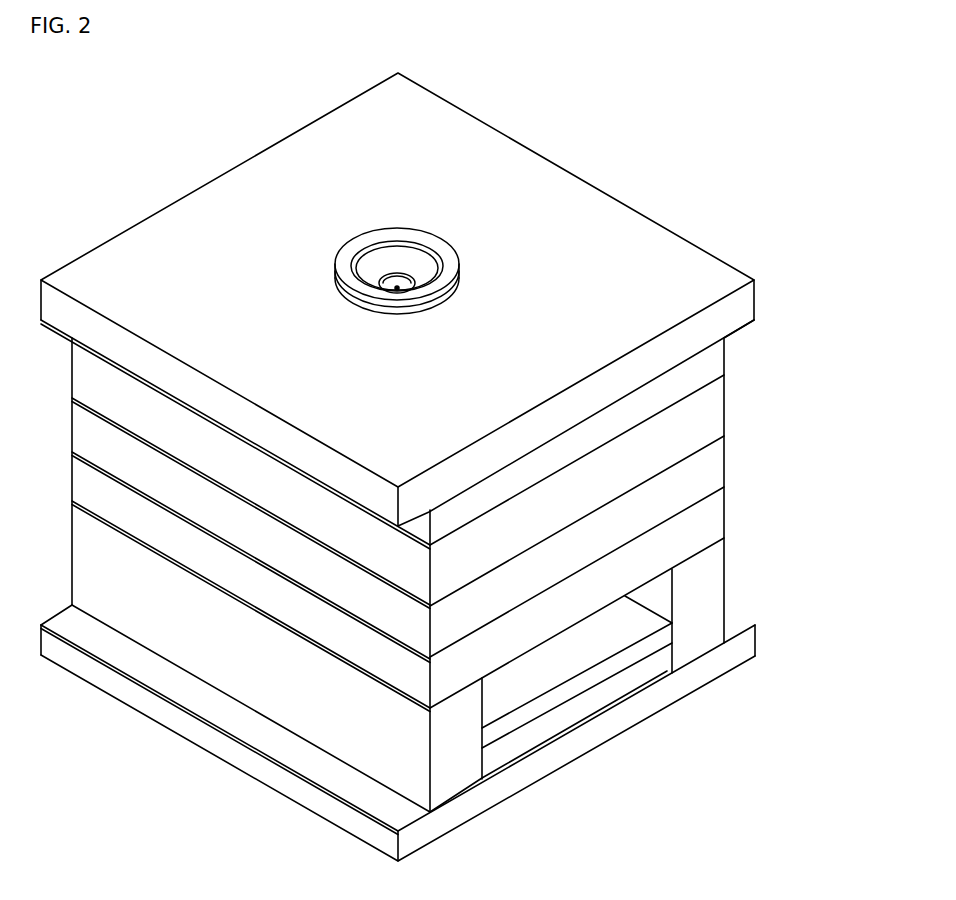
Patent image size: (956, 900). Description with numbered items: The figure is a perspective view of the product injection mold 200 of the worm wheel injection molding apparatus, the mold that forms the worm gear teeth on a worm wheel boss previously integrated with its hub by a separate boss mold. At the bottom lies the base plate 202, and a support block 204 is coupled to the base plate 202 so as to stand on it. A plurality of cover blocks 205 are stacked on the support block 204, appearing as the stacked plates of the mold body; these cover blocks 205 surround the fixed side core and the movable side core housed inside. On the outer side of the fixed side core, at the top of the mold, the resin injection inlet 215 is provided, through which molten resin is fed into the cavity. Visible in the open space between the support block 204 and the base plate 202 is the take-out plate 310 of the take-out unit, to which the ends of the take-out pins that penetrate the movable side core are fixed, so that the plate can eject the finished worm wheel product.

The product injection mold 200 is at (636, 190).
The resin injection inlet 215 is at (428, 240).
The cover blocks 205 is at (743, 357).
The support block 204 is at (715, 592).
The take-out plate 310 is at (607, 692).
The base plate 202 is at (472, 802).